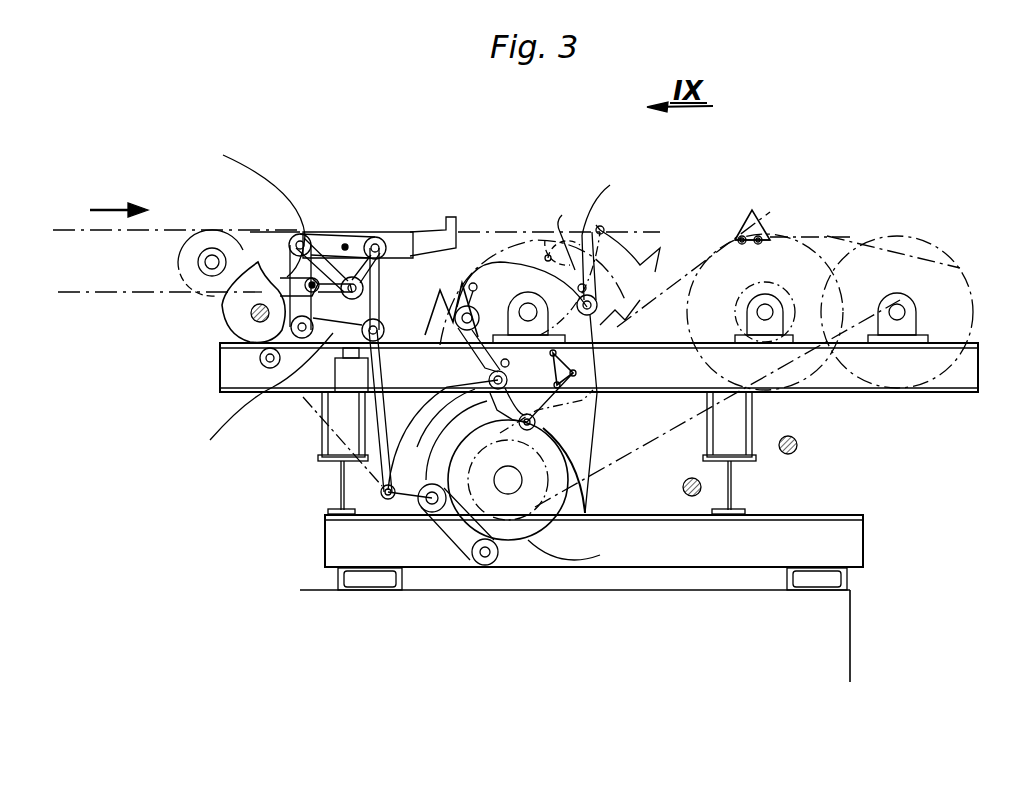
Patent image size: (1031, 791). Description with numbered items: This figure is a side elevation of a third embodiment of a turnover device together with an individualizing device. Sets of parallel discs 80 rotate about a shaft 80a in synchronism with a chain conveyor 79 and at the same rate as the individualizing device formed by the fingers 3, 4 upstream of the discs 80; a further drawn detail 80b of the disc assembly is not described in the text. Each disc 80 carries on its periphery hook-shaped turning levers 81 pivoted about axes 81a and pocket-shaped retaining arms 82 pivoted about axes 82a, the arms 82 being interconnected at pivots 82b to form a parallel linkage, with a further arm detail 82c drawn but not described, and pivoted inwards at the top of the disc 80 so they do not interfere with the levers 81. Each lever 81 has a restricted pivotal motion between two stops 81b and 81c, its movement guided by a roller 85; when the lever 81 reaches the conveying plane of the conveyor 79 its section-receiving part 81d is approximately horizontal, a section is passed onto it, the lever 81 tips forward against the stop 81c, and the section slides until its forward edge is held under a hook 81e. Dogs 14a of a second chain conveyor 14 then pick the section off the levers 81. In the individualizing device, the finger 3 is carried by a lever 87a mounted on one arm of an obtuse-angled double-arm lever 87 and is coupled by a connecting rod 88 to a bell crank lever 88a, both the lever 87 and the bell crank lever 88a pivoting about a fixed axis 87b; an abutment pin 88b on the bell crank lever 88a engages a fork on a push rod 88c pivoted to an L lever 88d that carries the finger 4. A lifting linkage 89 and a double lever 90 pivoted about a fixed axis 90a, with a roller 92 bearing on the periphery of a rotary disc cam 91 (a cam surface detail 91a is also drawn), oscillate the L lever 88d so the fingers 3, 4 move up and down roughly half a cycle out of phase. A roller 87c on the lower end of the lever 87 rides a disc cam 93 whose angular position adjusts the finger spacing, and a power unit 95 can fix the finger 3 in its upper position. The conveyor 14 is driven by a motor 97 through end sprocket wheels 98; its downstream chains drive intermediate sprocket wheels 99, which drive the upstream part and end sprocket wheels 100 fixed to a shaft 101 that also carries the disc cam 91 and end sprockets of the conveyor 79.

The finger 3 is at (413, 240).
The finger 4 is at (456, 217).
The second chain conveyor 14 is at (823, 236).
The dogs 14a is at (762, 192).
The chain conveyor 79 is at (481, 232).
The discs 80 is at (507, 237).
The shaft 80a is at (520, 312).
The cam follower 80b is at (590, 395).
The levers 81 is at (596, 232).
The pivot axes 81a is at (530, 263).
The stop 81b is at (560, 230).
The stop 81c is at (469, 284).
The section-receiving part 81d is at (432, 315).
The hook 81e is at (438, 296).
The retaining arms 82 is at (645, 265).
The pivot axes 82a is at (598, 245).
The pivots 82b is at (640, 235).
The lever arm 82c is at (630, 250).
The roller 85 is at (582, 250).
The double-arm lever 87 is at (293, 267).
The lever 87a is at (247, 214).
The fixed axis 87b is at (270, 385).
The roller 87c is at (252, 396).
The connecting rod 88 is at (338, 275).
The bell crank lever 88a is at (370, 345).
The abutment pin 88b is at (293, 267).
The push rod 88c is at (347, 270).
The L lever 88d is at (410, 240).
The lifting linkage 89 is at (387, 487).
The double lever 90 is at (473, 535).
The fixed axis 90a is at (432, 515).
The disc cam 91 is at (550, 540).
The cam surface 91a is at (565, 545).
The roller 92 is at (490, 556).
The disc cam 93 is at (235, 306).
The power unit 95 is at (353, 370).
The motor 97 is at (748, 300).
The end sprocket wheels 98 is at (948, 266).
The intermediate sprocket wheels 99 is at (785, 250).
The end sprocket wheels 100 is at (505, 530).
The shaft 101 is at (608, 521).